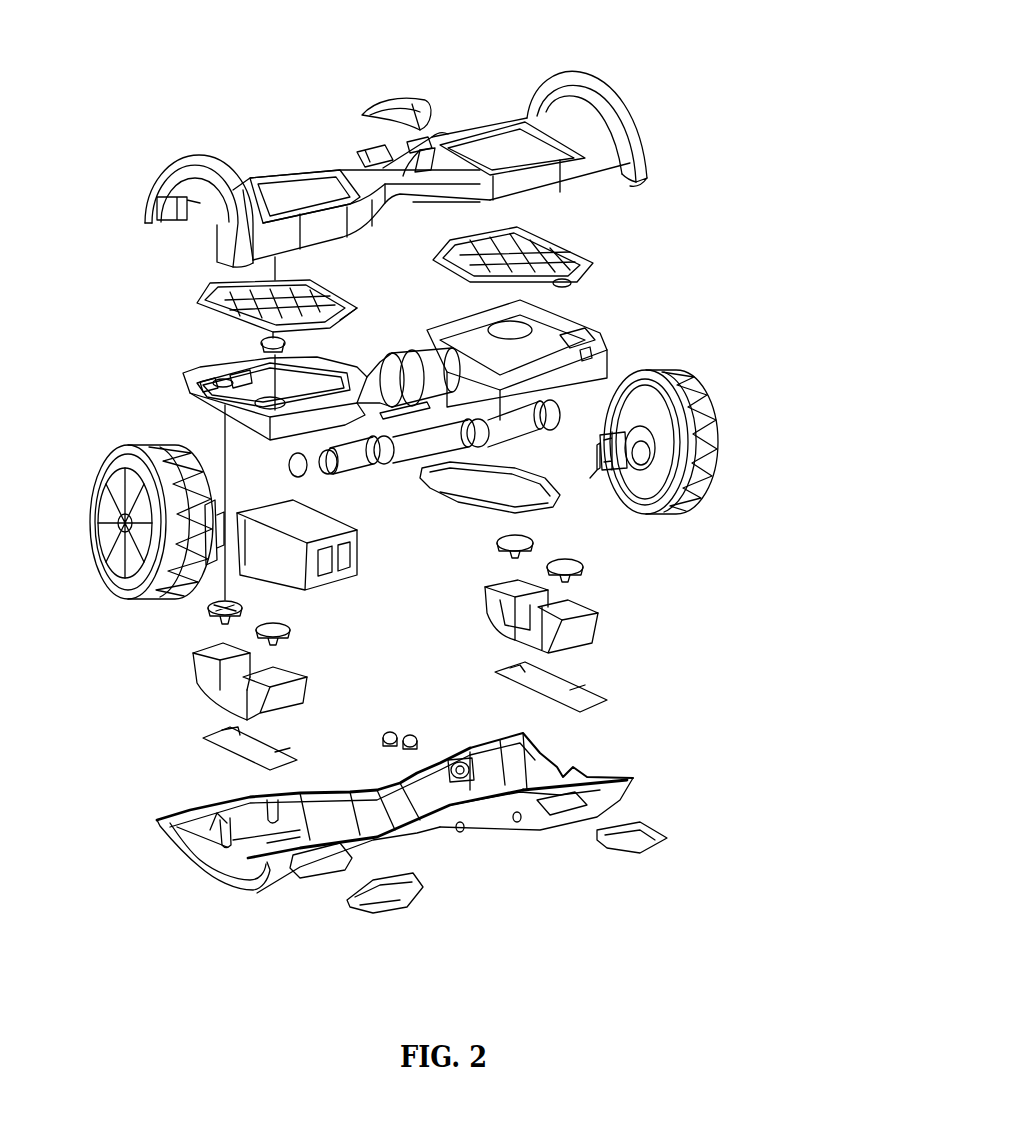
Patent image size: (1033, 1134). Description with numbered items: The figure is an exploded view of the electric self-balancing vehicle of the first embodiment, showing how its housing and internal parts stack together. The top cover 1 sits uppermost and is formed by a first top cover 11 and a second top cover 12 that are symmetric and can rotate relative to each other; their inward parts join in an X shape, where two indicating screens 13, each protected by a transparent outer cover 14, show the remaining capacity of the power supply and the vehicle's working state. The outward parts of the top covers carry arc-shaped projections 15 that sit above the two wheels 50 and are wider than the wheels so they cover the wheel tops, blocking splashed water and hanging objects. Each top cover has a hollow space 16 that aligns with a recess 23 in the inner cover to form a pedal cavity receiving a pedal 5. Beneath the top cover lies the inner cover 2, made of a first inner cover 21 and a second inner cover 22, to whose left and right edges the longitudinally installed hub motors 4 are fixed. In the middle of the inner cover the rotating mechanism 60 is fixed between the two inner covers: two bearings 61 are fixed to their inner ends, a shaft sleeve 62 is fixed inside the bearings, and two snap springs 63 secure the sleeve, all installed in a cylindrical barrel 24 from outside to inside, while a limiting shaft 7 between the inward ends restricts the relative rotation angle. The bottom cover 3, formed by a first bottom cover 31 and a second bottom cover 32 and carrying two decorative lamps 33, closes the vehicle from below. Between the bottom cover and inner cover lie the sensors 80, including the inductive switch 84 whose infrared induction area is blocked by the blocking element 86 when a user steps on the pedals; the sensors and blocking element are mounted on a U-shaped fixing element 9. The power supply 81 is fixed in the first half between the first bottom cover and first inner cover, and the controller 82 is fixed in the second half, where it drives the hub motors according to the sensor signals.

The top cover 1 is at (659, 114).
The inner cover 2 is at (162, 400).
The bottom cover 3 is at (645, 800).
The hub motor 4 is at (112, 569).
The pedal 5 is at (190, 285).
The limiting shaft 7 is at (449, 404).
The U-shaped fixing element 9 is at (614, 642).
The first top cover 11 is at (340, 180).
The second top cover 12 is at (433, 157).
The indicating screen 13 is at (370, 147).
The transparent outer cover 14 is at (370, 108).
The arc-shaped projection 15 is at (180, 163).
The hollow space 16 is at (272, 200).
The first inner cover 21 is at (262, 360).
The second inner cover 22 is at (530, 308).
The recess 23 is at (520, 333).
The cylindrical barrel 24 is at (425, 362).
The first bottom cover 31 is at (290, 878).
The second bottom cover 32 is at (528, 820).
The decorative lamp 33 is at (632, 840).
The wheel 50 is at (97, 443).
The rotating mechanism 60 is at (823, 398).
The bearing 61 is at (600, 450).
The shaft sleeve 62 is at (590, 497).
The snap spring 63 is at (600, 407).
The sensor 80 is at (607, 702).
The power supply 81 is at (240, 550).
The controller 82 is at (558, 516).
The inductive switch 84 is at (212, 737).
The blocking element 86 is at (210, 614).